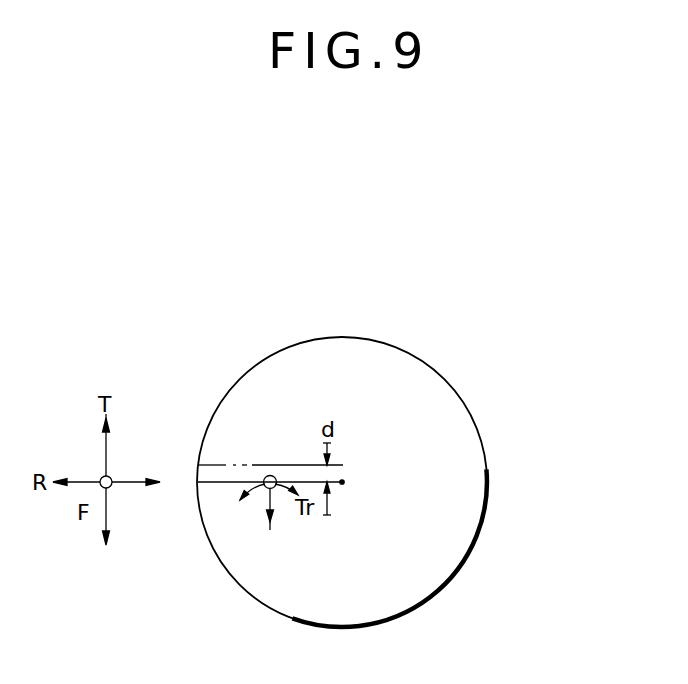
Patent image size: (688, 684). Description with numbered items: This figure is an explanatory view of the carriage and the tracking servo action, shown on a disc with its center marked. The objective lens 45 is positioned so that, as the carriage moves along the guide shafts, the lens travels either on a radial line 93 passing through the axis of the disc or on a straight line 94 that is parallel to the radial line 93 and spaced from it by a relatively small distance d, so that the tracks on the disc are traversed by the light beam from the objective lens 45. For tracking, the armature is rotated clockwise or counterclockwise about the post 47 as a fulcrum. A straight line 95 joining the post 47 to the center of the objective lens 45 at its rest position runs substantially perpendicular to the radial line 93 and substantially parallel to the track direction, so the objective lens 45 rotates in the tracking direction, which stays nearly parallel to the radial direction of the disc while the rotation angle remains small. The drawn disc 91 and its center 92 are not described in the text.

The disc 91 is at (487, 491).
The center 92 is at (343, 481).
The radial line 93 is at (207, 507).
The straight line 94 is at (202, 463).
The straight line 95 is at (273, 507).
The objective lens 45 is at (270, 475).
The post 47 is at (270, 530).